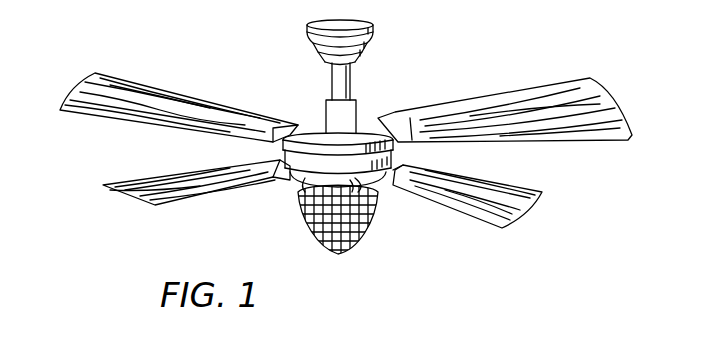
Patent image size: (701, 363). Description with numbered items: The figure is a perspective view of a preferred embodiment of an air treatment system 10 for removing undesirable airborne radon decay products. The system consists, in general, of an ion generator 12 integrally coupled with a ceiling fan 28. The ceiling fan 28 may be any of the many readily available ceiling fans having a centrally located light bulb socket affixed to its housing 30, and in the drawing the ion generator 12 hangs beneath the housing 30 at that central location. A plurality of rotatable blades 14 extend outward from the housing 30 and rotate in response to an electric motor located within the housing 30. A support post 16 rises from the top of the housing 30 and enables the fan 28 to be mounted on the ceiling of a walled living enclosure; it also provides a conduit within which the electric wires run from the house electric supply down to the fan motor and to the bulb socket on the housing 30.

The air treatment system 10 is at (389, 246).
The ion generator 12 is at (300, 224).
The rotatable blades 14 is at (497, 95).
The support post 16 is at (350, 78).
The ceiling fan 28 is at (273, 111).
The housing 30 is at (405, 157).